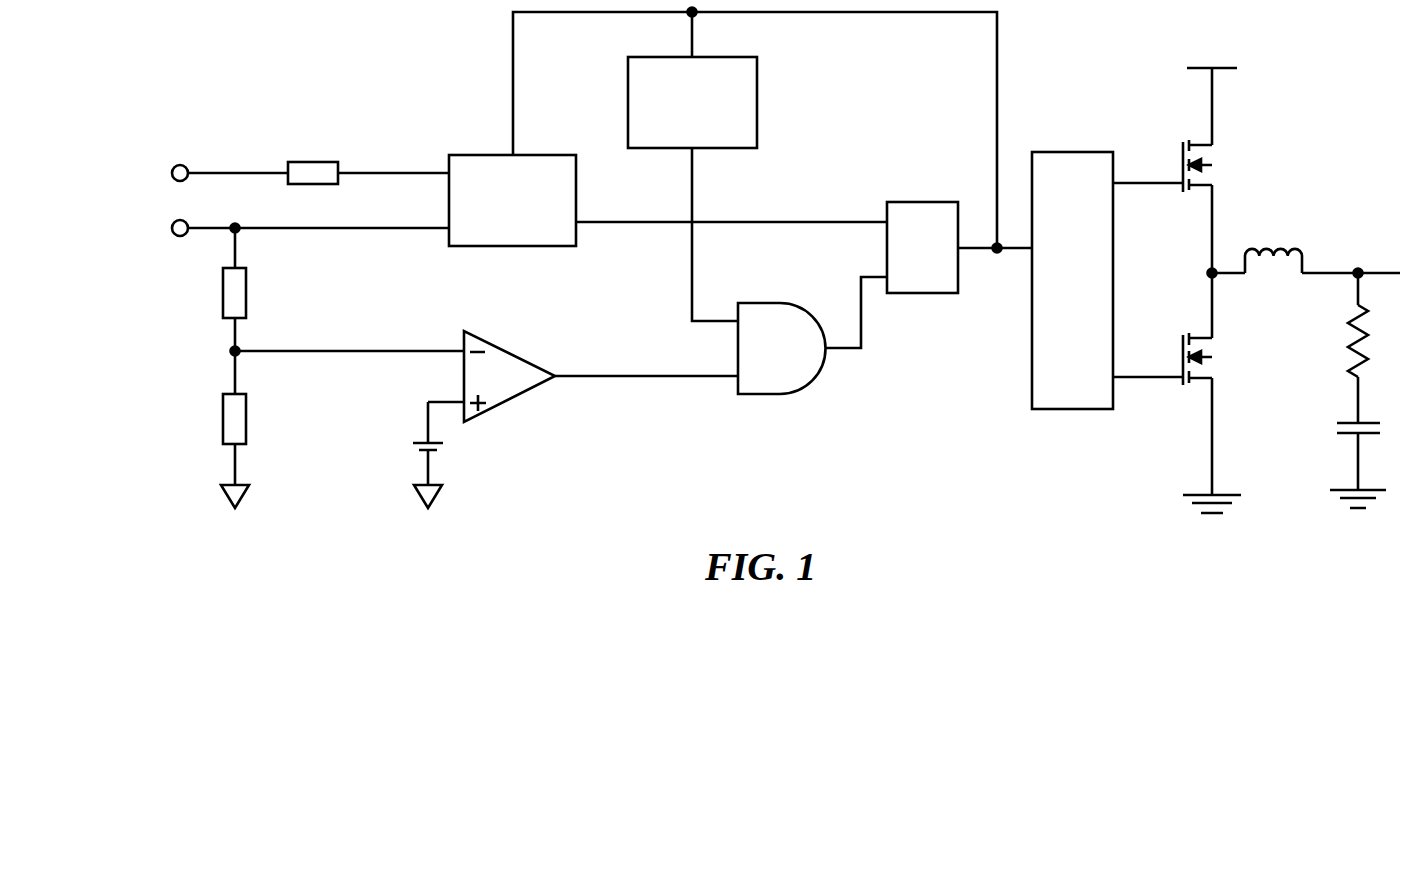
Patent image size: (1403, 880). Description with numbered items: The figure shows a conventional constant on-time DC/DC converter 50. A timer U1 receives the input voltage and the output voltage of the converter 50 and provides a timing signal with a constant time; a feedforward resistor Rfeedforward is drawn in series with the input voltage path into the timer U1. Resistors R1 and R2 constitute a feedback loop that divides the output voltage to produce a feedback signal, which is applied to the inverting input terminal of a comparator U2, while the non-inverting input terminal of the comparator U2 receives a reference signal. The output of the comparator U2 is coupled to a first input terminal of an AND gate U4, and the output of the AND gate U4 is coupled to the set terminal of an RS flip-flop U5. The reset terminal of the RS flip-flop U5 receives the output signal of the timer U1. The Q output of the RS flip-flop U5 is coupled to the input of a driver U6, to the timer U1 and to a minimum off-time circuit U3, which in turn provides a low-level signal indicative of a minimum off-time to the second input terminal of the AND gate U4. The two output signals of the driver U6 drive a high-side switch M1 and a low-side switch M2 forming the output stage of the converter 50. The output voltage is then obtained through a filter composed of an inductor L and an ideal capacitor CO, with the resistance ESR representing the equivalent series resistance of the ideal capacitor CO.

The constant on-time DC/DC converter 50 is at (182, 60).
The feedforward resistor Rfeedforward is at (329, 154).
The resistor R1 is at (212, 293).
The resistor R2 is at (212, 419).
The timer U1 is at (512, 200).
The comparator U2 is at (509, 376).
The minimum off-time circuit U3 is at (692, 102).
The AND gate U4 is at (782, 348).
The RS flip-flop U5 is at (922, 235).
The driver U6 is at (1072, 280).
The high-side switch M1 is at (1215, 166).
The low-side switch M2 is at (1215, 359).
The inductor L is at (1273, 240).
The equivalent series resistance ESR is at (1327, 341).
The ideal capacitor CO is at (1348, 440).